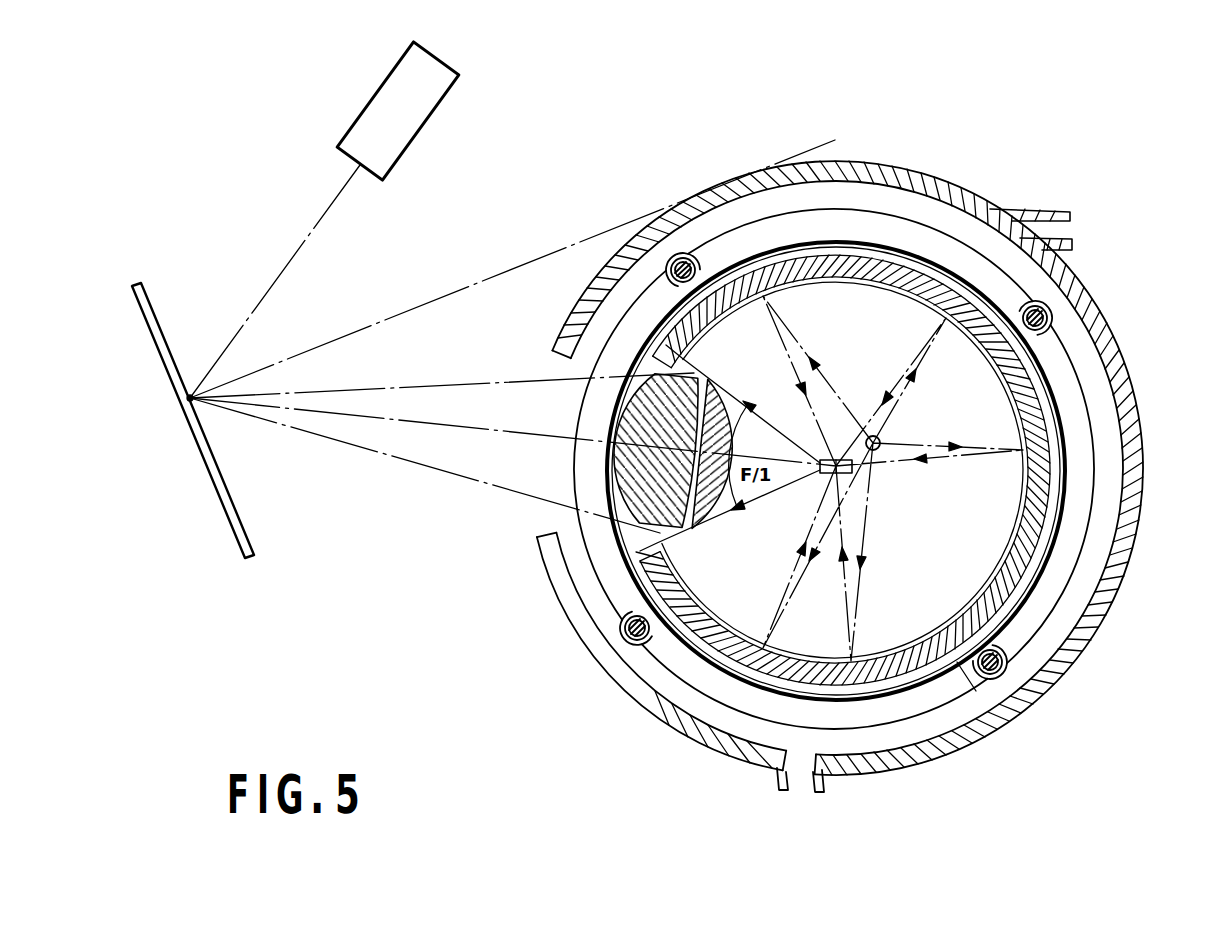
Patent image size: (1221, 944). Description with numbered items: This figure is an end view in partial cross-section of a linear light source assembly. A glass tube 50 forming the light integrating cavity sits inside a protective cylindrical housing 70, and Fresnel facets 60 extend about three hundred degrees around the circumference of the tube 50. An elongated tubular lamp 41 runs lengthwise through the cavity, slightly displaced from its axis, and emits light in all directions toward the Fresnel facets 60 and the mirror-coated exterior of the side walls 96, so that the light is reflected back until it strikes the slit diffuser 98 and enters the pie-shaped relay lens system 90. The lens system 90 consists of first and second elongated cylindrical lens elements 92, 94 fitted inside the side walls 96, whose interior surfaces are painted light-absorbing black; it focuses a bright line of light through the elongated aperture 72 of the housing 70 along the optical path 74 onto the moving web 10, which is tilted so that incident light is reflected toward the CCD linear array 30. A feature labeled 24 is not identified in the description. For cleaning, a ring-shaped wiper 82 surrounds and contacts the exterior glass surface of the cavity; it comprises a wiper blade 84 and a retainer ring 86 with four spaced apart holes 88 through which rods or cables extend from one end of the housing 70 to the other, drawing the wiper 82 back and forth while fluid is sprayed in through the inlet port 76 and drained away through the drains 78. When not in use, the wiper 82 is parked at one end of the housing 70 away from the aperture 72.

The moving web 10 is at (222, 500).
The measurement spot 24 is at (197, 404).
The CCD linear array 30 is at (433, 107).
The elongated tubular lamp 41 is at (880, 437).
The glass tube 50 is at (1030, 597).
The Fresnel facets 60 is at (1027, 522).
The protective cylindrical housing 70 is at (545, 590).
The elongated aperture 72 is at (528, 515).
The optical path 74 is at (400, 460).
The inlet port 76 is at (1072, 210).
The drains 78 is at (820, 792).
The ring-shaped wiper 82 is at (1020, 645).
The wiper blade 84 is at (957, 681).
The retainer ring 86 is at (892, 700).
The spaced apart holes 88 is at (630, 640).
The relay lens system 90 is at (746, 519).
The first elongated cylindrical lens element 92 is at (677, 530).
The second elongated cylindrical lens element 94 is at (703, 528).
The side walls 96 is at (732, 385).
The slit diffuser 98 is at (852, 472).